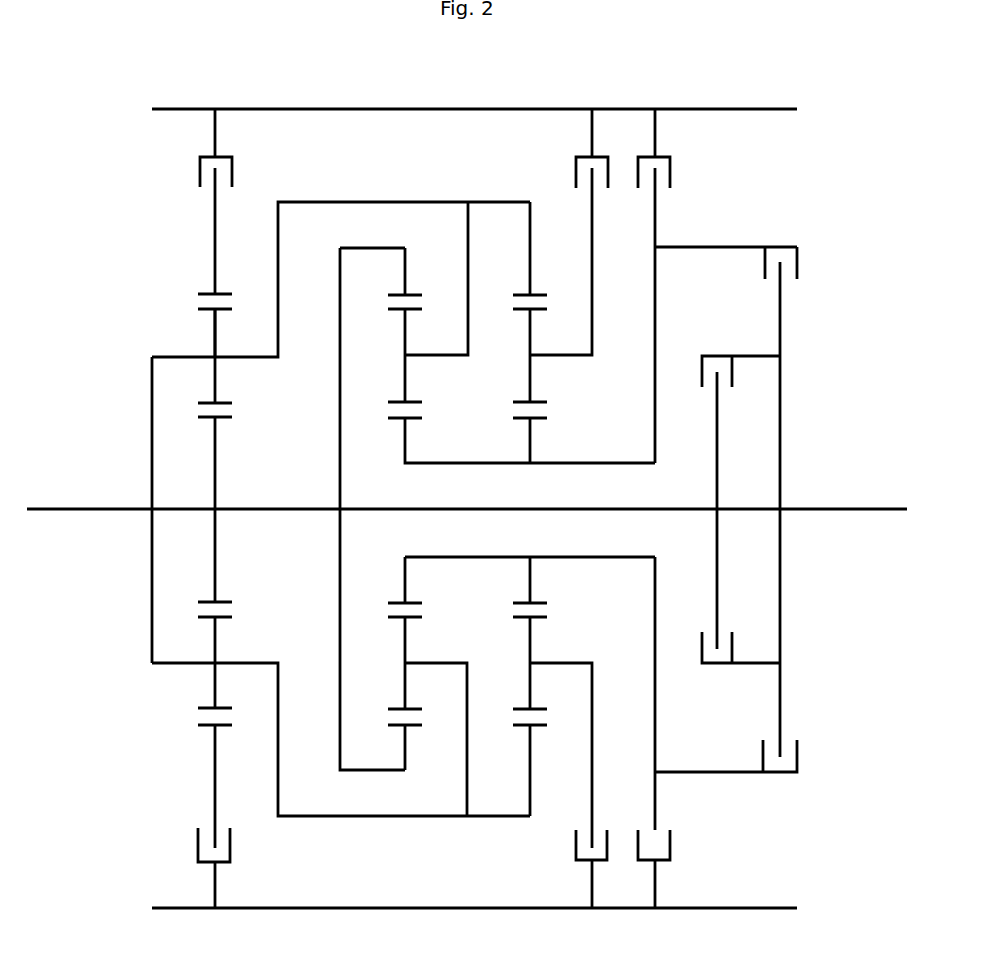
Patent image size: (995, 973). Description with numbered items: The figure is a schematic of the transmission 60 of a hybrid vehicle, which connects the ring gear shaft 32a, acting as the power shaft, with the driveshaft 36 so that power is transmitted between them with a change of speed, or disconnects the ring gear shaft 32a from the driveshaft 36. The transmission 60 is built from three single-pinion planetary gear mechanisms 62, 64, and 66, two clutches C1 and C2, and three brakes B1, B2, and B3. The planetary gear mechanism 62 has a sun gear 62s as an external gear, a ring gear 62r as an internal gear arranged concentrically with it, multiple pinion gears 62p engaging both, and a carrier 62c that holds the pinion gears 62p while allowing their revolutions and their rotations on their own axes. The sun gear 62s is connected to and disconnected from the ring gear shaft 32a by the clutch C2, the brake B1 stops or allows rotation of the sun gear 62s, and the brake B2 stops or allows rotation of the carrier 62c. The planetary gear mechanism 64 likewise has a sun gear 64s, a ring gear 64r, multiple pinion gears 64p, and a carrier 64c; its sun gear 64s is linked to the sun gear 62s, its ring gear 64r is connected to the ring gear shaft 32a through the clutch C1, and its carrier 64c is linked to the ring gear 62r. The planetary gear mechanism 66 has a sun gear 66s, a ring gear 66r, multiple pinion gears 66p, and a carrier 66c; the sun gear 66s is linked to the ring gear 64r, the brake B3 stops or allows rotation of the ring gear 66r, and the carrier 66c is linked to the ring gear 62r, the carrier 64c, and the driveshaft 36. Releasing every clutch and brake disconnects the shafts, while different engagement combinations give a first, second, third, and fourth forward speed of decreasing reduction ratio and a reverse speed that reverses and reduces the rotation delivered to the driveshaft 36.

The transmission 60 is at (838, 151).
The driveshaft 36 is at (100, 508).
The ring gear shaft 32a is at (863, 508).
The planetary gear mechanism 66 is at (291, 508).
The ring gear 66r is at (215, 264).
The pinion gears 66p is at (215, 323).
The carrier 66c is at (227, 358).
The sun gear 66s is at (215, 443).
The planetary gear mechanism 64 is at (496, 509).
The ring gear 64r is at (437, 264).
The carrier 64c is at (417, 357).
The pinion gears 64p is at (405, 393).
The sun gear 64s is at (405, 447).
The planetary gear mechanism 62 is at (558, 507).
The ring gear 62r is at (562, 264).
The carrier 62c is at (542, 357).
The pinion gears 62p is at (530, 393).
The sun gear 62s is at (530, 447).
The brake B1 is at (670, 170).
The brake B2 is at (576, 168).
The brake B3 is at (200, 172).
The clutch C1 is at (718, 355).
The clutch C2 is at (782, 245).